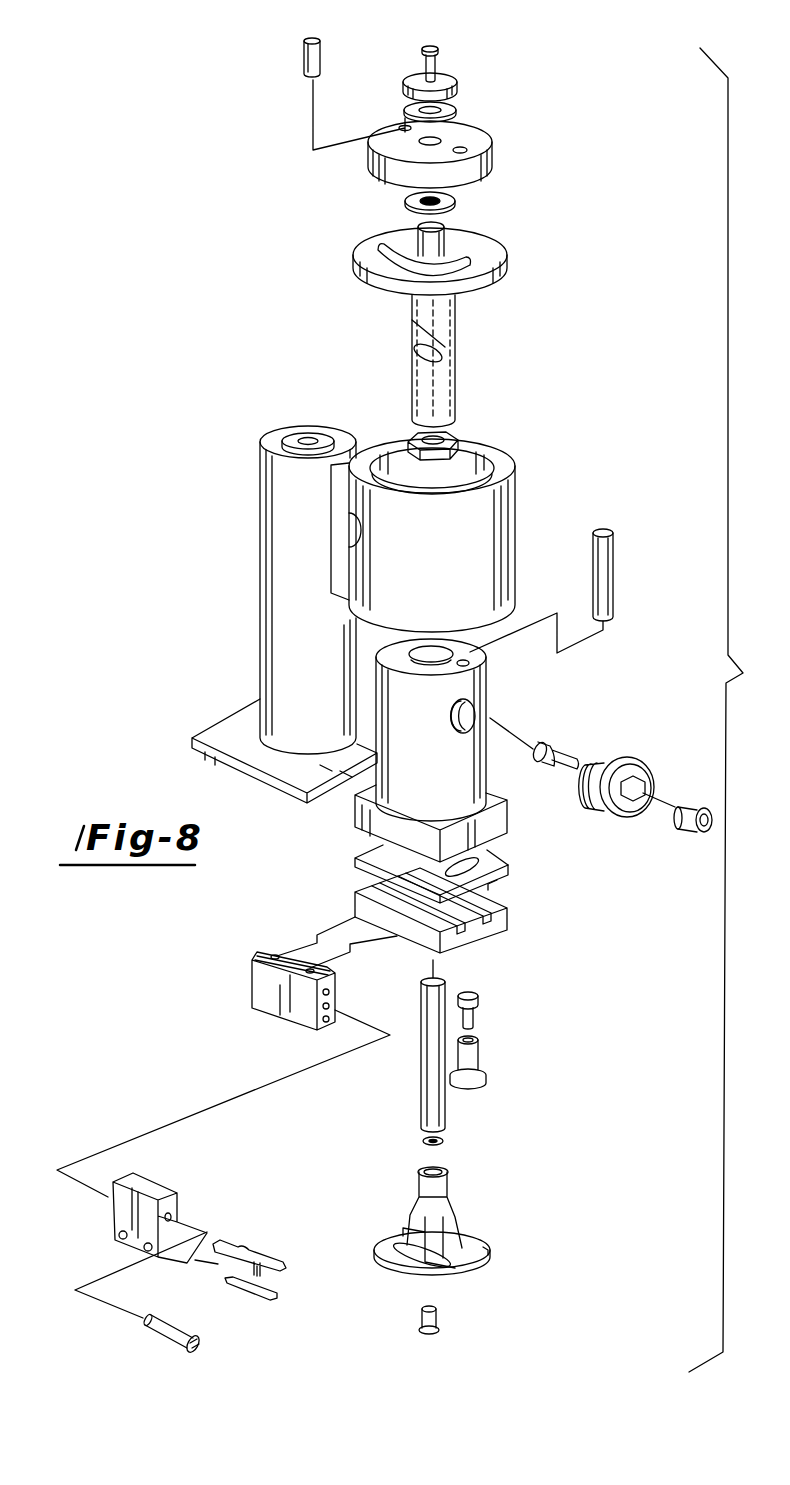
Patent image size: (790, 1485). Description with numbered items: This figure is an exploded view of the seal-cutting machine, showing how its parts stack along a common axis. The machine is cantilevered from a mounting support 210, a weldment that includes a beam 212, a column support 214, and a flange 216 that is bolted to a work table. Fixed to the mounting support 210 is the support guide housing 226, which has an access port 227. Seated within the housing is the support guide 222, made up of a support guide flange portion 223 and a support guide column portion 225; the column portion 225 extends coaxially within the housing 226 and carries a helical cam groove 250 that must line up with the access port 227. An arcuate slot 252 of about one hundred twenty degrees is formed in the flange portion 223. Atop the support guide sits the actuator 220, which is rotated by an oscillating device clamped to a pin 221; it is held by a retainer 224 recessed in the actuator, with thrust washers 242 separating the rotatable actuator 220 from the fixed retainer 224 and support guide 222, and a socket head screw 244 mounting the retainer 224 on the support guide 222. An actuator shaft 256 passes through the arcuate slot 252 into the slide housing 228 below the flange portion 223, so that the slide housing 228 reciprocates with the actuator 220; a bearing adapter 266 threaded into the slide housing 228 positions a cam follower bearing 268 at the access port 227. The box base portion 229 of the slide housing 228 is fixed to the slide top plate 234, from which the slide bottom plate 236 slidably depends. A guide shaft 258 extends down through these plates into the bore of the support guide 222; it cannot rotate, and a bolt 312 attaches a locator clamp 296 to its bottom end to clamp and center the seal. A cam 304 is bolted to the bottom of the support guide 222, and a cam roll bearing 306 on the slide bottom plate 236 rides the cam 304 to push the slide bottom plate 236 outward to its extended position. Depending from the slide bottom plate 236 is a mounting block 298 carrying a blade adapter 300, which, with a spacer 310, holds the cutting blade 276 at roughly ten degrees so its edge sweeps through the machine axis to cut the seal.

The mounting support 210 is at (371, 609).
The beam 212 is at (335, 562).
The column support 214 is at (261, 604).
The flange 216 is at (216, 726).
The actuator 220 is at (492, 131).
The pin 221 is at (302, 62).
The support guide 222 is at (423, 312).
The support guide flange portion 223 is at (505, 277).
The retainer 224 is at (455, 78).
The support guide column portion 225 is at (412, 361).
The support guide housing 226 is at (382, 535).
The access port 227 is at (255, 515).
The slide housing 228 is at (416, 803).
The box base portion 229 is at (365, 832).
The slide top plate 234 is at (507, 860).
The slide bottom plate 236 is at (510, 914).
The thrust washers 242 is at (457, 106).
The socket head screw 244 is at (438, 47).
The helical cam groove 250 is at (356, 349).
The arcuate slot 252 is at (462, 256).
The actuator shaft 256 is at (611, 556).
The guide shaft 258 is at (420, 1082).
The bearing adapter 266 is at (633, 758).
The cam follower bearing 268 is at (547, 746).
The cutting blade 276 is at (268, 1300).
The locator clamp 296 is at (472, 1225).
The mounting block 298 is at (252, 990).
The blade adapter 300 is at (162, 1182).
The cam 304 is at (455, 432).
The cam roll bearing 306 is at (471, 988).
The spacer 310 is at (237, 1240).
The bolt 312 is at (439, 1333).